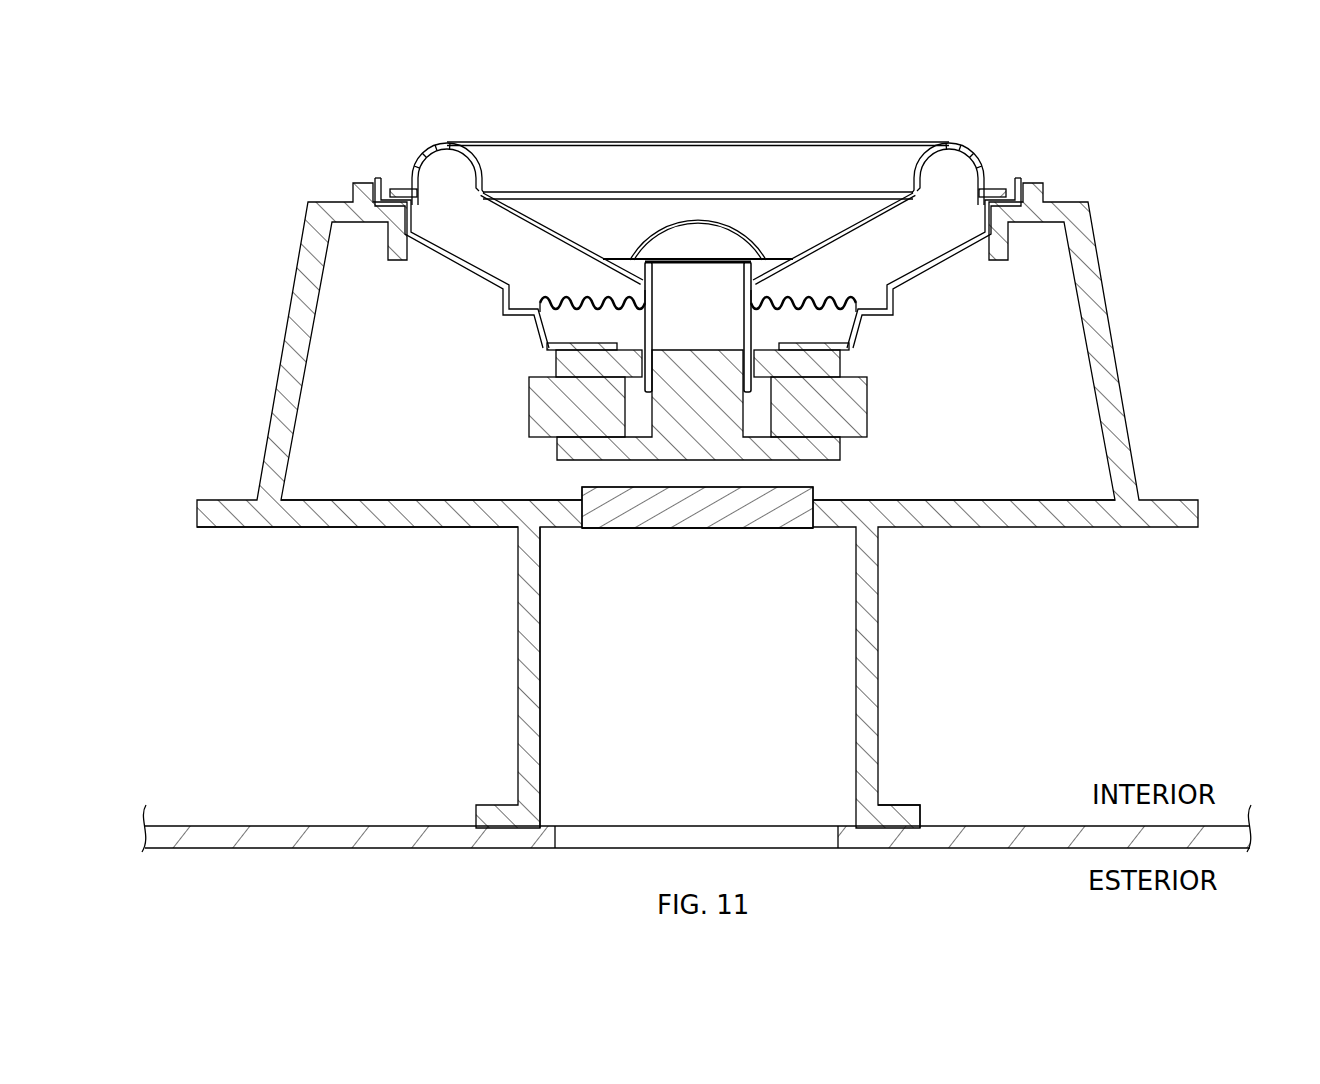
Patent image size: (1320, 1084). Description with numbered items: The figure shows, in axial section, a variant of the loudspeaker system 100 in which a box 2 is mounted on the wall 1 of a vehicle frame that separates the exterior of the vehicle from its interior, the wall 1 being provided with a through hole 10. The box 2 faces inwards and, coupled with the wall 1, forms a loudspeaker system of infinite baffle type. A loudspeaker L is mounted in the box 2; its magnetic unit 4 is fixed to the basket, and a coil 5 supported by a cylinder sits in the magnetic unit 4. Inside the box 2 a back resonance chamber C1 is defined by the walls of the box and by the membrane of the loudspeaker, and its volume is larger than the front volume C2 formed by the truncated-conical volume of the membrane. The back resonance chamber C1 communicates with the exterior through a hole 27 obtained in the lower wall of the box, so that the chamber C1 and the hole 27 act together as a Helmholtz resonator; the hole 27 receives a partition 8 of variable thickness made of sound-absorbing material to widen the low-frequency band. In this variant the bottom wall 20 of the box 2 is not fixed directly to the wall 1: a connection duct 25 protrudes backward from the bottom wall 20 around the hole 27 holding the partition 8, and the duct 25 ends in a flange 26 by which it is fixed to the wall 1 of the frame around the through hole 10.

The wall 1 is at (225, 827).
The box 2 is at (1133, 438).
The magnetic unit 4 is at (520, 443).
The coil 5 is at (645, 330).
The partition 8 is at (636, 510).
The through hole 10 is at (557, 838).
The bottom wall 20 is at (1095, 520).
The duct 25 is at (528, 680).
The flange 26 is at (910, 803).
The hole 27 is at (813, 520).
The loudspeaker system 100 is at (1115, 227).
The loudspeaker L is at (973, 142).
The back resonance chamber C1 is at (1053, 377).
The front volume C2 is at (779, 228).